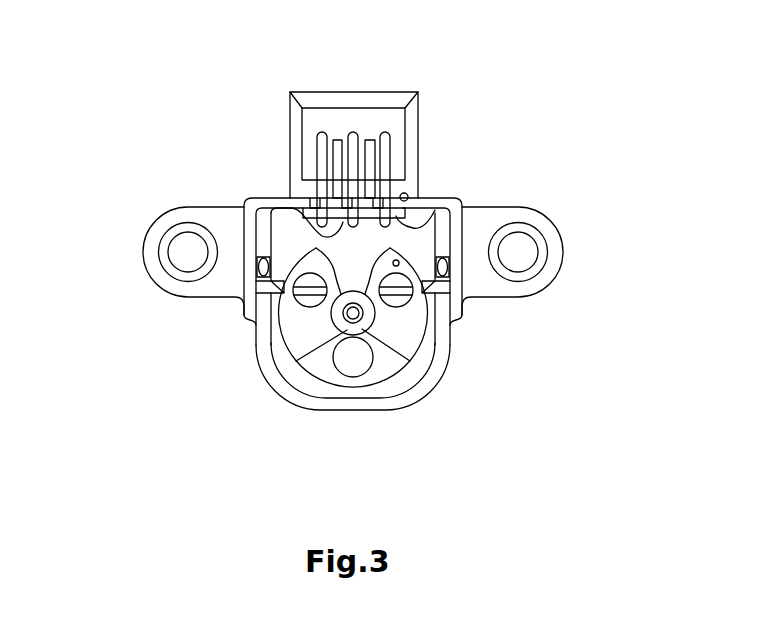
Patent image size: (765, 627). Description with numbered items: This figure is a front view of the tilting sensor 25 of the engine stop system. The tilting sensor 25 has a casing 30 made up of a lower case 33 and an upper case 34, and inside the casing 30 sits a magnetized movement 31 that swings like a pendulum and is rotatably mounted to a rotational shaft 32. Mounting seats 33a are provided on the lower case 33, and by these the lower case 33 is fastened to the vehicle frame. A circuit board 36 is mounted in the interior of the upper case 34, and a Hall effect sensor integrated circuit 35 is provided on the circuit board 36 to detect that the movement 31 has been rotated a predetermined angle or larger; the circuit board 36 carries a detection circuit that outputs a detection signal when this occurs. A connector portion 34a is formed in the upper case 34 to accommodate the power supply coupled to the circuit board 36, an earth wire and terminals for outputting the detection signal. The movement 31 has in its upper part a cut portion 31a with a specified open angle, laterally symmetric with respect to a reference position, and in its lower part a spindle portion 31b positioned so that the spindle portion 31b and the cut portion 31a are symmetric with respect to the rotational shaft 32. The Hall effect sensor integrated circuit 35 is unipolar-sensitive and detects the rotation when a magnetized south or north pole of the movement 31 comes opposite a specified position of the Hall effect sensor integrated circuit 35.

The tilting sensor 25 is at (165, 128).
The casing 30 is at (250, 322).
The magnetized movement 31 is at (412, 340).
The cut portion 31a is at (316, 249).
The spindle portion 31b is at (342, 368).
The rotational shaft 32 is at (360, 322).
The lower case 33 is at (258, 366).
The mounting seats 33a is at (200, 250).
The upper case 34 is at (452, 198).
The connector portion 34a is at (290, 137).
The Hall effect sensor integrated circuit 35 is at (293, 206).
The circuit board 36 is at (435, 210).